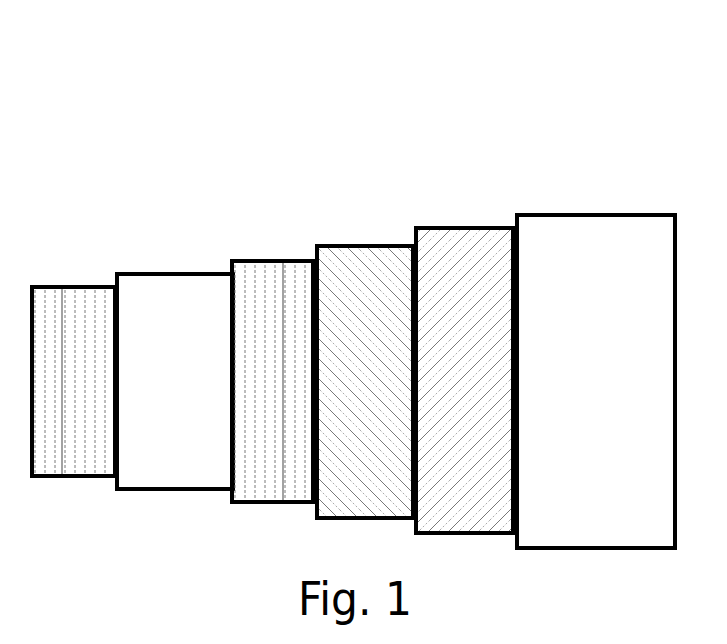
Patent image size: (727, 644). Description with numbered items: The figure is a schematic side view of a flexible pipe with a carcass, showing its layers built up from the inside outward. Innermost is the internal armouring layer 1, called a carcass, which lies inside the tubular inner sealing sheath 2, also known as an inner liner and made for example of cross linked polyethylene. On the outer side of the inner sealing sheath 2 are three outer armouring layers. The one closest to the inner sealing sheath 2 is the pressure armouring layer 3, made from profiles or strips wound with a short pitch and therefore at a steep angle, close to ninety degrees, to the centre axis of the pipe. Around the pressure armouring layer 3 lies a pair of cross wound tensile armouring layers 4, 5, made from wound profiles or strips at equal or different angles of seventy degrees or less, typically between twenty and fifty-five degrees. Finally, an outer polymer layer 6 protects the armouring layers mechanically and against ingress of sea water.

The internal armouring layer 1 is at (61, 241).
The inner sealing sheath 2 is at (176, 225).
The pressure armouring layer 3 is at (291, 223).
The tensile armouring layer 4 is at (376, 195).
The tensile armouring layer 5 is at (476, 195).
The outer polymer layer 6 is at (618, 151).